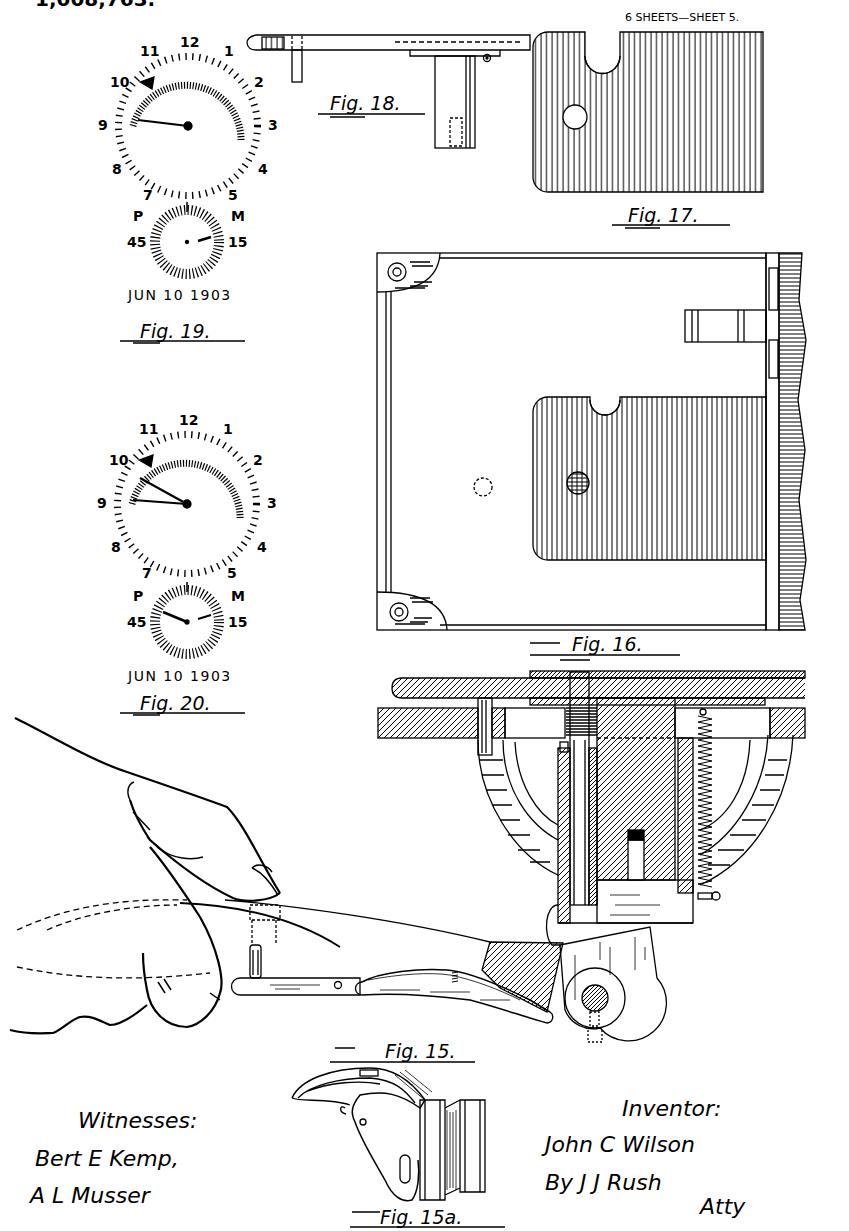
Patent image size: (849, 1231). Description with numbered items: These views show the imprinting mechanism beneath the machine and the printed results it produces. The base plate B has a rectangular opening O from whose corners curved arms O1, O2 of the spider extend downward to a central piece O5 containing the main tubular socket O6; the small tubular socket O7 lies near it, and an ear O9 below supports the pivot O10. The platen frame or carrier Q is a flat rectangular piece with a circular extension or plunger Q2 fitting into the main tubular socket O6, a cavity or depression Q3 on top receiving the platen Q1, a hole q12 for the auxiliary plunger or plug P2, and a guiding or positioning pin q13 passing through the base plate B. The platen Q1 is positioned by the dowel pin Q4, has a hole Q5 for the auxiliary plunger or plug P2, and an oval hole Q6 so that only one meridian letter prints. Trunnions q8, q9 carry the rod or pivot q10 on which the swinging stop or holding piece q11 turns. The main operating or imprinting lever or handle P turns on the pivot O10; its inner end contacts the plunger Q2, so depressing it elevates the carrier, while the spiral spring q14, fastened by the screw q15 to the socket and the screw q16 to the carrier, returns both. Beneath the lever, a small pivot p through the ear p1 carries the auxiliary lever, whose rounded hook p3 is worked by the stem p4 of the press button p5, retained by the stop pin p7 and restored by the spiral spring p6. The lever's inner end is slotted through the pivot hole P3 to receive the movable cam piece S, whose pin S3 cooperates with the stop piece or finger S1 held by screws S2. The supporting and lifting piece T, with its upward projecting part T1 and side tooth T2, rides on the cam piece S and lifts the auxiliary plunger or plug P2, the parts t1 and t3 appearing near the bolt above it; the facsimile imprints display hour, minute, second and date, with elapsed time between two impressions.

In FIG. 18, the platen frame or carrier Q is at (348, 50).
In FIG. 16, the platen frame or carrier Q is at (571, 441).
In FIG. 15, the platen frame or carrier Q is at (430, 678).
In FIG. 17, the platen Q1 is at (648, 112).
In FIG. 16, the platen Q1 is at (649, 478).
In FIG. 15, the platen Q1 is at (740, 668).
In FIG. 18, the circular extension or plunger Q2 is at (462, 96).
In FIG. 15, the circular extension or plunger Q2 is at (645, 795).
In FIG. 18, the rectangular cavity or depression Q3 is at (500, 58).
In FIG. 15, the rectangular cavity or depression Q3 is at (760, 676).
In FIG. 17, the screw Q4 is at (598, 184).
In FIG. 16, the screw Q4 is at (605, 548).
In FIG. 17, the slotted standard Q5 is at (575, 129).
In FIG. 16, the slotted standard Q5 is at (589, 483).
In FIG. 15, the slotted standard Q5 is at (560, 690).
In FIG. 17, the oval shaped hole Q6 is at (602, 60).
In FIG. 16, the oval shaped hole Q6 is at (605, 412).
In FIG. 16, the trunnion q8 is at (768, 297).
In FIG. 16, the trunnion q9 is at (768, 366).
In FIG. 16, the rod or pivot q10 is at (780, 247).
In FIG. 16, the swinging stop or holding piece q11 is at (685, 326).
In FIG. 18, the hole q12 is at (422, 56).
In FIG. 18, the guiding or positioning pin q13 is at (297, 82).
In FIG. 16, the guiding or positioning pin q13 is at (474, 487).
In FIG. 15, the guiding or positioning pin q13 is at (478, 748).
In FIG. 15, the spiral spring q14 is at (712, 757).
In FIG. 15, the screw q15 is at (720, 896).
In FIG. 18, the screw q16 is at (489, 69).
In FIG. 15, the screw q16 is at (706, 712).
In FIG. 15, the base plate B is at (425, 738).
In FIG. 15, the rectangular aperture or opening O is at (635, 796).
In FIG. 15, the curved arm O1 is at (527, 864).
In FIG. 15, the curved arm O2 is at (712, 848).
In FIG. 15, the central piece O5 is at (693, 915).
In FIG. 15, the main tubular socket O6 is at (693, 719).
In FIG. 15, the small tubular socket O7 is at (560, 812).
In FIG. 15, the ear O9 is at (548, 935).
In FIG. 15, the pivot O10 is at (533, 977).
In FIG. 15, the bolt head t1 is at (565, 720).
In FIG. 15, the collar t3 is at (560, 748).
In FIG. 15, the supporting and lifting piece T is at (665, 925).
In FIG. 15, the upward projecting part T1 is at (645, 901).
In FIG. 15, the side projecting tooth or piece T2 is at (548, 912).
In FIG. 15, the main operating or imprinting lever or handle P is at (335, 923).
In FIG. 15A, the main operating or imprinting lever or handle P is at (292, 1083).
In FIG. 15, the auxiliary plunger or plug P2 is at (577, 797).
In FIG. 15, the pivot hole P3 is at (608, 998).
In FIG. 15, the small pivot p is at (340, 981).
In FIG. 15A, the small pivot p is at (360, 1122).
In FIG. 15, the ear p1 is at (300, 995).
In FIG. 15A, the ear p1 is at (340, 1110).
In FIG. 15, the rounded hook p3 is at (522, 1039).
In FIG. 15, the stem p4 is at (248, 978).
In FIG. 15, the press button p5 is at (278, 905).
In FIG. 15A, the press button p5 is at (378, 1073).
In FIG. 15, the spiral spring p6 is at (455, 985).
In FIG. 15, the stop pin p7 is at (261, 958).
In FIG. 15, the movable cam piece S is at (570, 1020).
In FIG. 15, the stop piece or finger S1 is at (590, 1030).
In FIG. 15, the screw S2 is at (596, 1042).
In FIG. 15, the pin S3 is at (605, 1025).